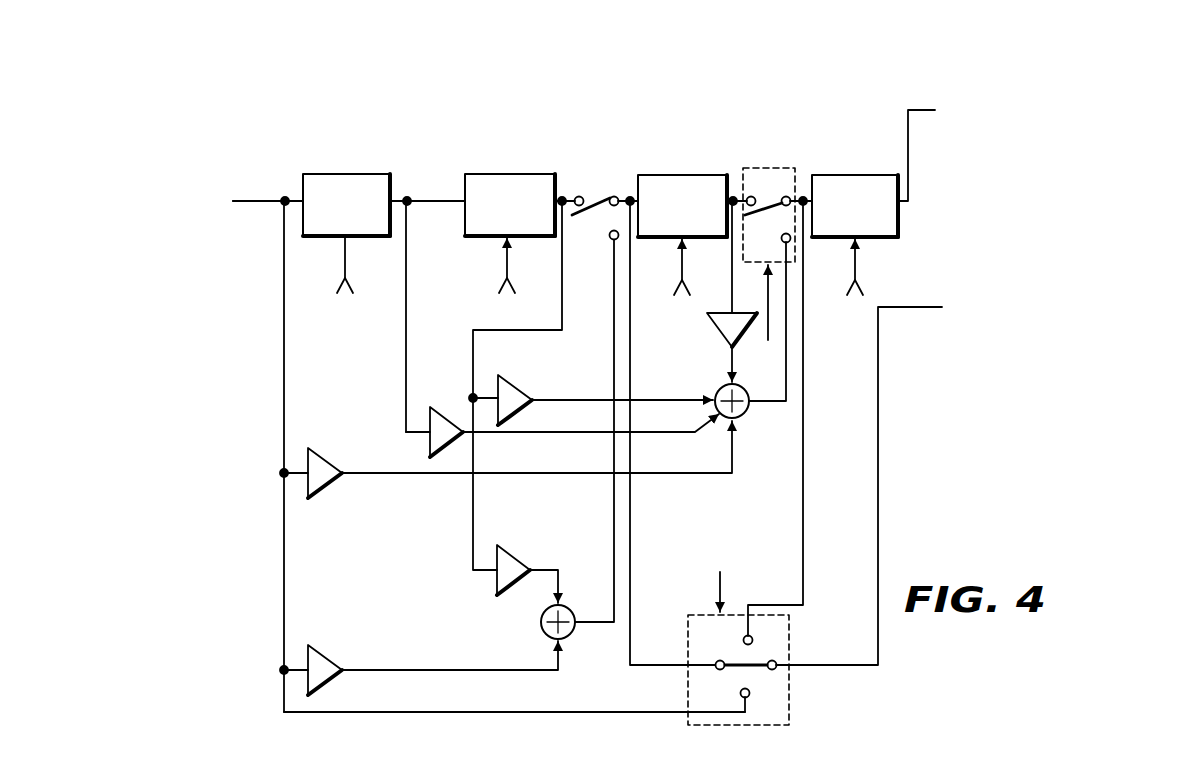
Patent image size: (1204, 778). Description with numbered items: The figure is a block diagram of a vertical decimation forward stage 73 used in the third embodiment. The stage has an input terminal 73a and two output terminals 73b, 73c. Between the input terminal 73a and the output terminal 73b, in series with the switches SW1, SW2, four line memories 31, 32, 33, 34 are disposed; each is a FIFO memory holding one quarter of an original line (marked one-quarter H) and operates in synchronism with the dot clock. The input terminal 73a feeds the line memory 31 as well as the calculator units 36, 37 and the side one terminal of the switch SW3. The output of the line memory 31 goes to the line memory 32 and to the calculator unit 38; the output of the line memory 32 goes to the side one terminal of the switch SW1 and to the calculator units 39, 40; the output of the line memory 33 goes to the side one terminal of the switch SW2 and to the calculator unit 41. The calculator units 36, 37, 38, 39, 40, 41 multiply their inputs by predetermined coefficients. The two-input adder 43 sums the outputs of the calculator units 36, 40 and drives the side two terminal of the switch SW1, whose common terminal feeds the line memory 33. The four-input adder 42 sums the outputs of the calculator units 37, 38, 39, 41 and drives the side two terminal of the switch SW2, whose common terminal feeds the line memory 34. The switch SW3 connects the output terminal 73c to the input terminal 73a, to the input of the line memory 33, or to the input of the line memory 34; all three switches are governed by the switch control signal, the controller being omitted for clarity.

The vertical decimation forward stage 73 is at (977, 439).
The input terminal 73a is at (250, 200).
The output terminal 73b is at (925, 108).
The output terminal 73c is at (938, 305).
The line memory 31 is at (353, 170).
The line memory 32 is at (515, 170).
The line memory 33 is at (689, 172).
The line memory 34 is at (865, 172).
The calculator unit 36 is at (321, 644).
The calculator unit 37 is at (321, 447).
The calculator unit 38 is at (444, 406).
The calculator unit 39 is at (520, 375).
The calculator unit 40 is at (513, 544).
The calculator unit 41 is at (748, 311).
The four-input adder 42 is at (744, 414).
The two-input adder 43 is at (568, 605).
The switch SW1 is at (593, 193).
The switch SW2 is at (778, 165).
The switch SW3 is at (790, 700).